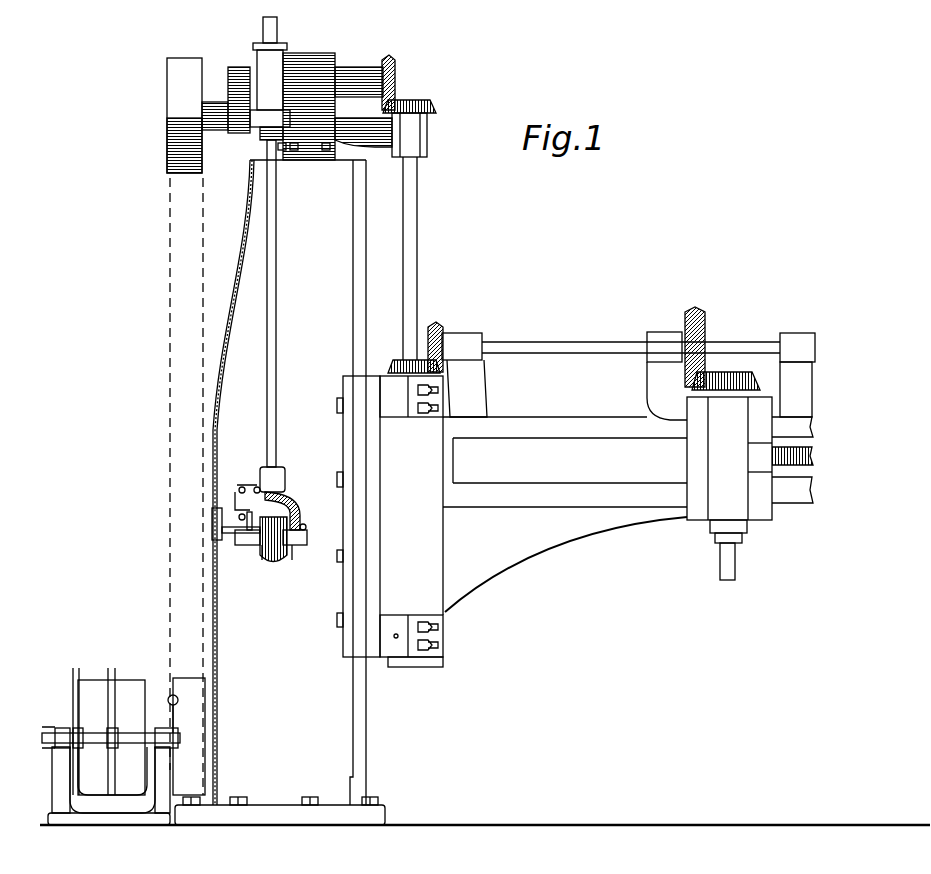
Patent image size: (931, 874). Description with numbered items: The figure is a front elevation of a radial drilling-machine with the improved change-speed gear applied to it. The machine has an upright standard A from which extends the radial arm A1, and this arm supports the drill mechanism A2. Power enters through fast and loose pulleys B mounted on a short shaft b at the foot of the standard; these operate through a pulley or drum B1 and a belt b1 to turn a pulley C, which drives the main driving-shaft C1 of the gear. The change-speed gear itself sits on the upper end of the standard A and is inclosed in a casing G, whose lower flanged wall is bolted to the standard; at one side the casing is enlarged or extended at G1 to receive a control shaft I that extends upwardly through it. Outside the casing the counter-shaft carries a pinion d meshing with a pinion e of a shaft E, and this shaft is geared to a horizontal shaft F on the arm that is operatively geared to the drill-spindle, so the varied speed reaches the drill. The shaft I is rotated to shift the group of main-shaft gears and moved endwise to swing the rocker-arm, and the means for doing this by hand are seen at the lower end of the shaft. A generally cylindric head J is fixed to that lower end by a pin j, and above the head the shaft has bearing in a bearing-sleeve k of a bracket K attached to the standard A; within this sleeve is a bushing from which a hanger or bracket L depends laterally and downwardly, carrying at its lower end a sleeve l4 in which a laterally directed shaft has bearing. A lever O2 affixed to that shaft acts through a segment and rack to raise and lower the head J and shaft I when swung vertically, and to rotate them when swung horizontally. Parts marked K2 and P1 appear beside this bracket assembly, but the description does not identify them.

The upright standard A is at (280, 492).
The radial arm A1 is at (512, 521).
The drill mechanism A2 is at (749, 443).
The fast and loose pulleys B is at (92, 687).
The pulley or drum B1 is at (182, 682).
The short shaft b is at (148, 733).
The belt b1 is at (170, 492).
The pulley C is at (183, 112).
The main driving-shaft C1 is at (210, 108).
The casing G is at (321, 101).
The extended part of casing G1 is at (290, 43).
The pinion d is at (393, 63).
The pinion e is at (421, 102).
The shaft E is at (418, 253).
The horizontal shaft F is at (540, 347).
The shaft I is at (276, 218).
The bracket K is at (247, 488).
The bearing-sleeve k is at (286, 480).
The hanger or bracket L is at (292, 506).
The lever O2 is at (307, 540).
The clamp block K2 is at (212, 522).
The pawl bar P1 is at (222, 540).
The head J is at (262, 560).
The pin j is at (250, 552).
The sleeve l4 is at (294, 552).